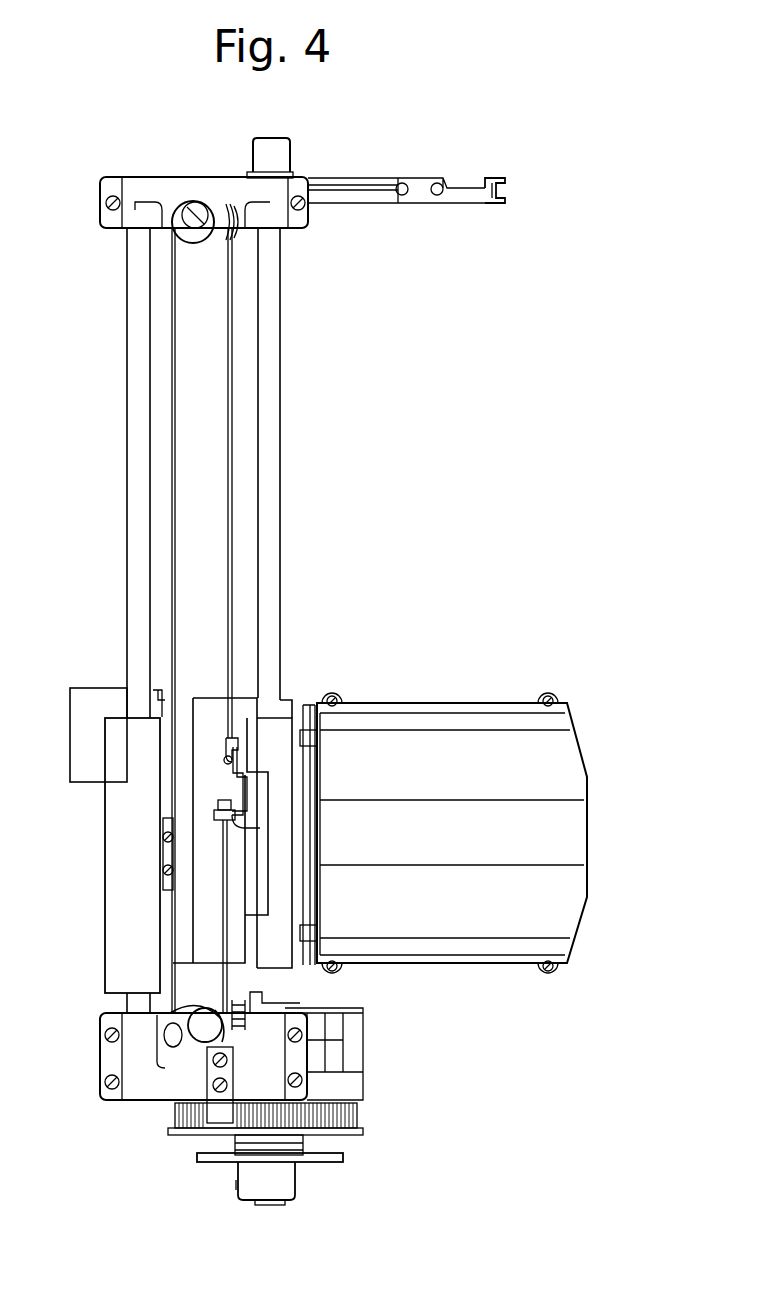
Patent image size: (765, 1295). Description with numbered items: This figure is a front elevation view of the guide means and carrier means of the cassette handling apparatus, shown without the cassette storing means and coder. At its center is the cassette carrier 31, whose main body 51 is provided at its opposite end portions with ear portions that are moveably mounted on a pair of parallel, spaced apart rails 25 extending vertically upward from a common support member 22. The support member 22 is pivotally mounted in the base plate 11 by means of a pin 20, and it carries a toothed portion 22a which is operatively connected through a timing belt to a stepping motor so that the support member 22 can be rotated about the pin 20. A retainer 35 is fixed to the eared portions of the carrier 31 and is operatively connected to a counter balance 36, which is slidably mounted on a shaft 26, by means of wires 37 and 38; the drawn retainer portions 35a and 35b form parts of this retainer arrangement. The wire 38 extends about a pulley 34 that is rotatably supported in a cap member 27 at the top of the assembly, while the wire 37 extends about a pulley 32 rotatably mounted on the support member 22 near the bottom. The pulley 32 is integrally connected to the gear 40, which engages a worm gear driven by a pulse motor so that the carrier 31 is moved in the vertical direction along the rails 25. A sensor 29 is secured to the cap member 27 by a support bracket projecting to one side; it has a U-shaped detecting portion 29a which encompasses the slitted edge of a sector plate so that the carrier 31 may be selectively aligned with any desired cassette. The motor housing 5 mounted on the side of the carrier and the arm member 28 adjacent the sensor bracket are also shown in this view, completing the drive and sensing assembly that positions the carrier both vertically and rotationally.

The motor 5 is at (562, 832).
The base plate 11 is at (197, 1160).
The pin 20 is at (262, 1205).
The support member 22 is at (130, 1060).
The toothed portion 22a is at (357, 1114).
The rails 25 is at (273, 405).
The shaft 26 is at (135, 342).
The cap member 27 is at (348, 207).
The arm member 28 is at (438, 203).
The sensor 29 is at (498, 178).
The U-shaped detecting portion 29a is at (498, 204).
The cassette carrier 31 is at (313, 692).
The pulley 32 is at (185, 1012).
The pulley 34 is at (188, 235).
The retainer 35 is at (255, 795).
The belt clamp 35a is at (233, 737).
The bracket lower portion 35b is at (237, 828).
The counter balance 36 is at (122, 840).
The wire 37 is at (220, 912).
The wire 38 is at (232, 438).
The gear 40 is at (280, 1003).
The main body 51 is at (195, 705).